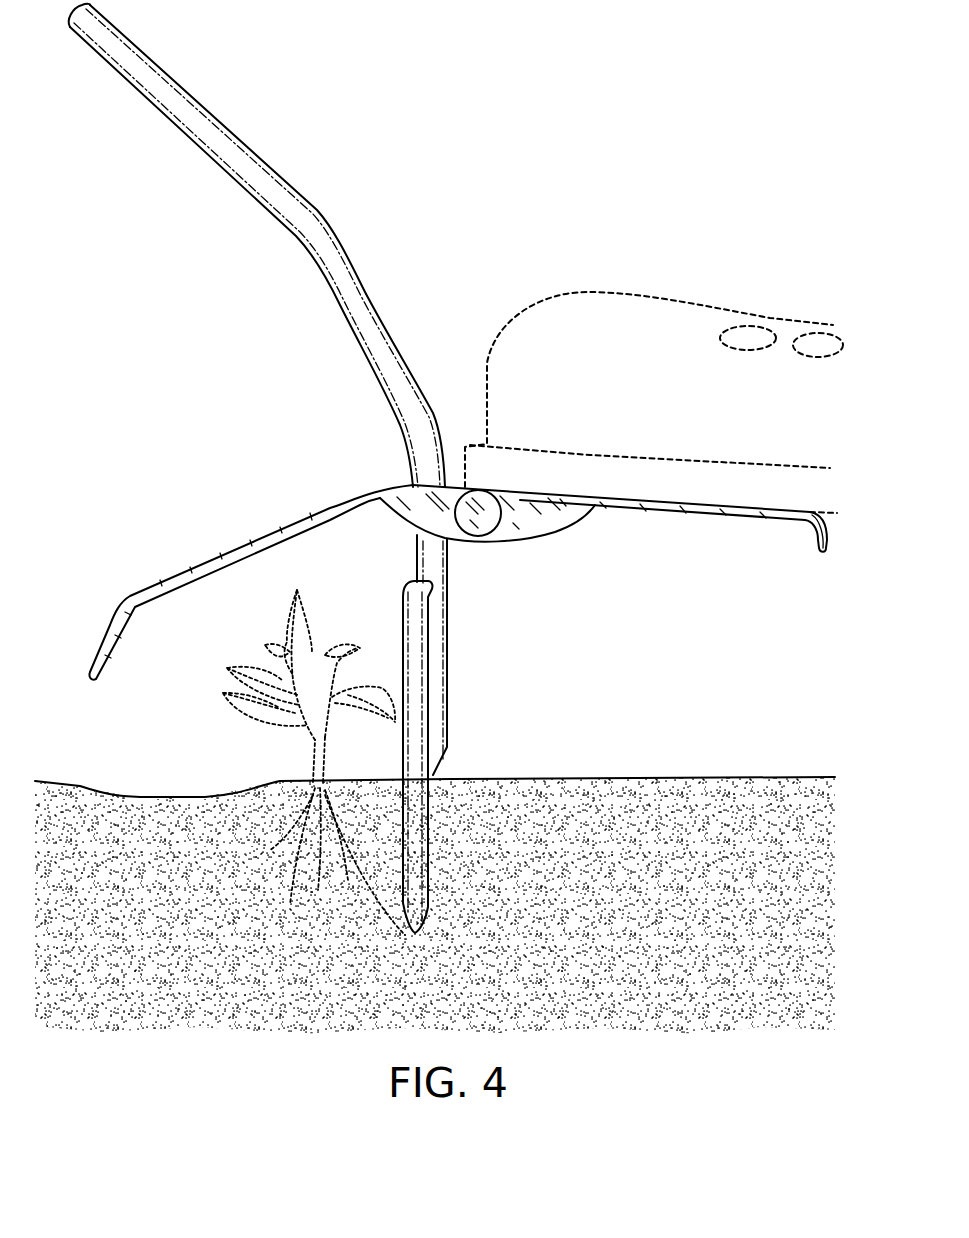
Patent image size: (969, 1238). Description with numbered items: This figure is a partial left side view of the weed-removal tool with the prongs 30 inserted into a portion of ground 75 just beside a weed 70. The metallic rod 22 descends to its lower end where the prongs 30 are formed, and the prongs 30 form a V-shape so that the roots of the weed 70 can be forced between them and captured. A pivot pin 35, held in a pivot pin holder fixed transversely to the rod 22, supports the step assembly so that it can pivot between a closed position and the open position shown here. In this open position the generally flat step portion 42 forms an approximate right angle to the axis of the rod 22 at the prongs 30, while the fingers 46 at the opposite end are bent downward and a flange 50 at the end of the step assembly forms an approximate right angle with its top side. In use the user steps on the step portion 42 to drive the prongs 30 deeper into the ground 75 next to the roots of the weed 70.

The metallic rod 22 is at (226, 124).
The prongs 30 is at (430, 887).
The pivot pin 35 is at (473, 508).
The step portion 42 is at (700, 503).
The fingers 46 is at (88, 662).
The flange 50 is at (823, 553).
The weed 70 is at (228, 716).
The ground 75 is at (676, 779).